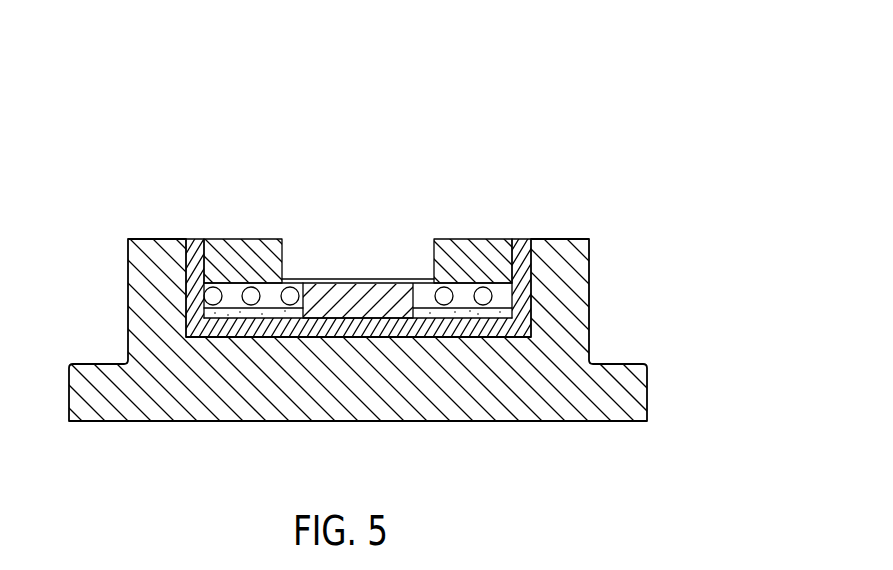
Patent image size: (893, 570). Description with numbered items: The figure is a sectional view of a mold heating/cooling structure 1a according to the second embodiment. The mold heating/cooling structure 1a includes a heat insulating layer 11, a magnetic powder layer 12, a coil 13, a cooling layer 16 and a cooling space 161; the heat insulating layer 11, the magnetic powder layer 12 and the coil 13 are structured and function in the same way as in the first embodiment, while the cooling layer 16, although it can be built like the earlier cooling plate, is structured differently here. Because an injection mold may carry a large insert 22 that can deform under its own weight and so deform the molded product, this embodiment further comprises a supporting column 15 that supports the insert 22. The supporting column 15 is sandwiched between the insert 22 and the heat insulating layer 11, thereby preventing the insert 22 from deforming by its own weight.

The mold heating/cooling structure 1a is at (141, 146).
The heat insulating layer 11 is at (527, 250).
The magnetic powder layer 12 is at (188, 303).
The coil 13 is at (187, 267).
The supporting column 15 is at (363, 283).
The cooling layer 16 is at (230, 266).
The cooling space 161 is at (244, 276).
The insert 22 is at (483, 252).